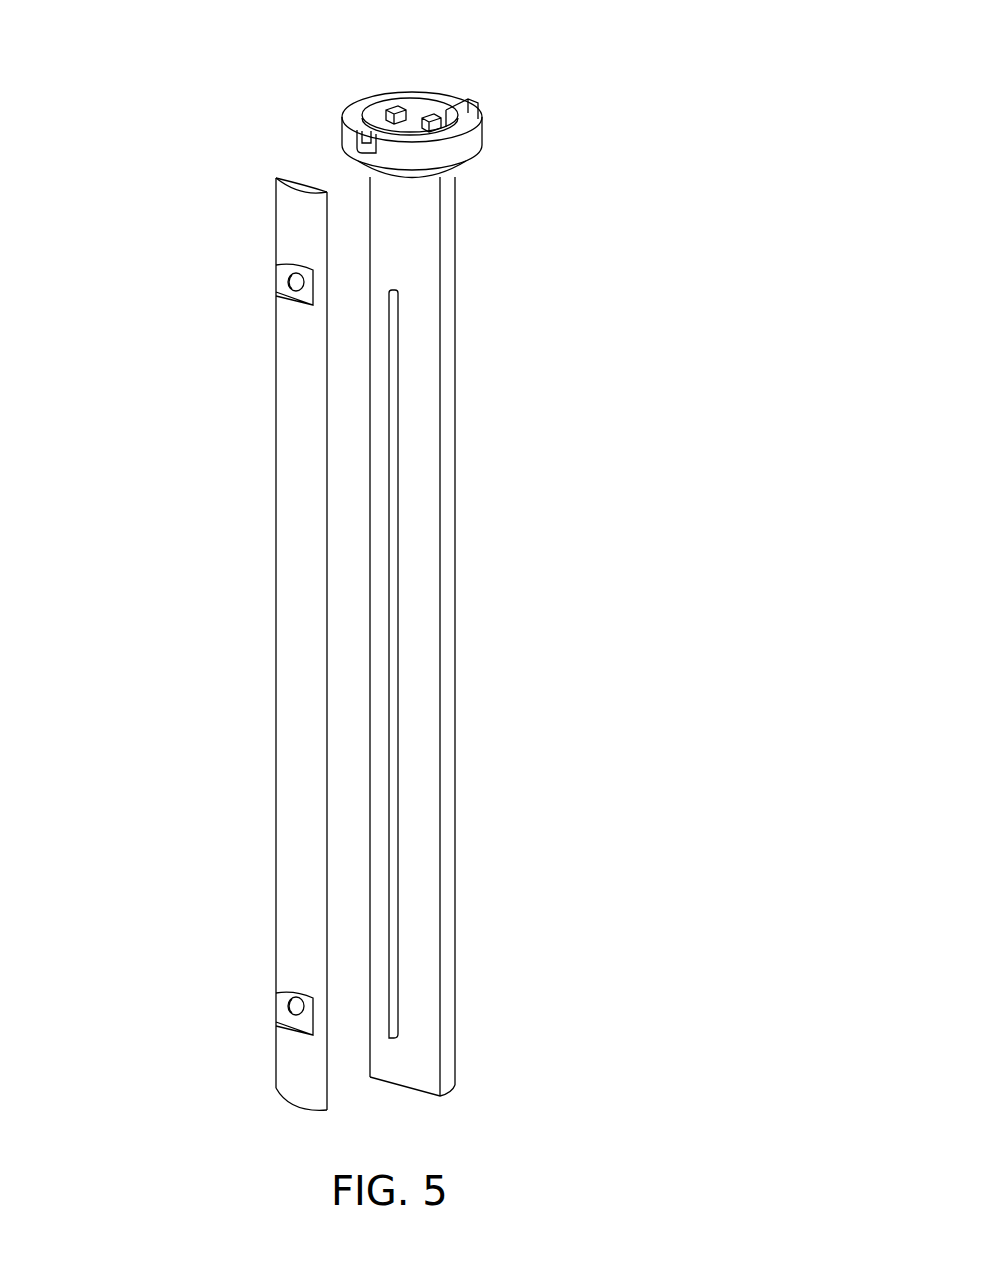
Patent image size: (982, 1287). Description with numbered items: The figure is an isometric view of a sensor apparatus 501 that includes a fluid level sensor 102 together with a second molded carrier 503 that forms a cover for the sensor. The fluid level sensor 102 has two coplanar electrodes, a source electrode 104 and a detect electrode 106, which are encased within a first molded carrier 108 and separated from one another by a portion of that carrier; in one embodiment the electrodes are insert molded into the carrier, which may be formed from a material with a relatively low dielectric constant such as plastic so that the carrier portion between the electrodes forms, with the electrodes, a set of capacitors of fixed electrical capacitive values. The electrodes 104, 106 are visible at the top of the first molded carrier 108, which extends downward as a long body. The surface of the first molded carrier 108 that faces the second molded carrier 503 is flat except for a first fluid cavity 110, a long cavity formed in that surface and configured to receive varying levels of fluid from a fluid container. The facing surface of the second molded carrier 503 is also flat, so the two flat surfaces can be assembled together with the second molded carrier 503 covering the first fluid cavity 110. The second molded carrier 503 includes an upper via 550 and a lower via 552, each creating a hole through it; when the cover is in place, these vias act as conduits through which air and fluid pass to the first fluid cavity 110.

The sensor apparatus 501 is at (760, 125).
The fluid level sensor 102 is at (457, 268).
The source electrode 104 is at (392, 104).
The detect electrode 106 is at (432, 118).
The first molded carrier 108 is at (417, 593).
The first fluid cavity 110 is at (393, 803).
The second molded carrier 503 is at (292, 594).
The upper via 550 is at (283, 283).
The lower via 552 is at (283, 1003).